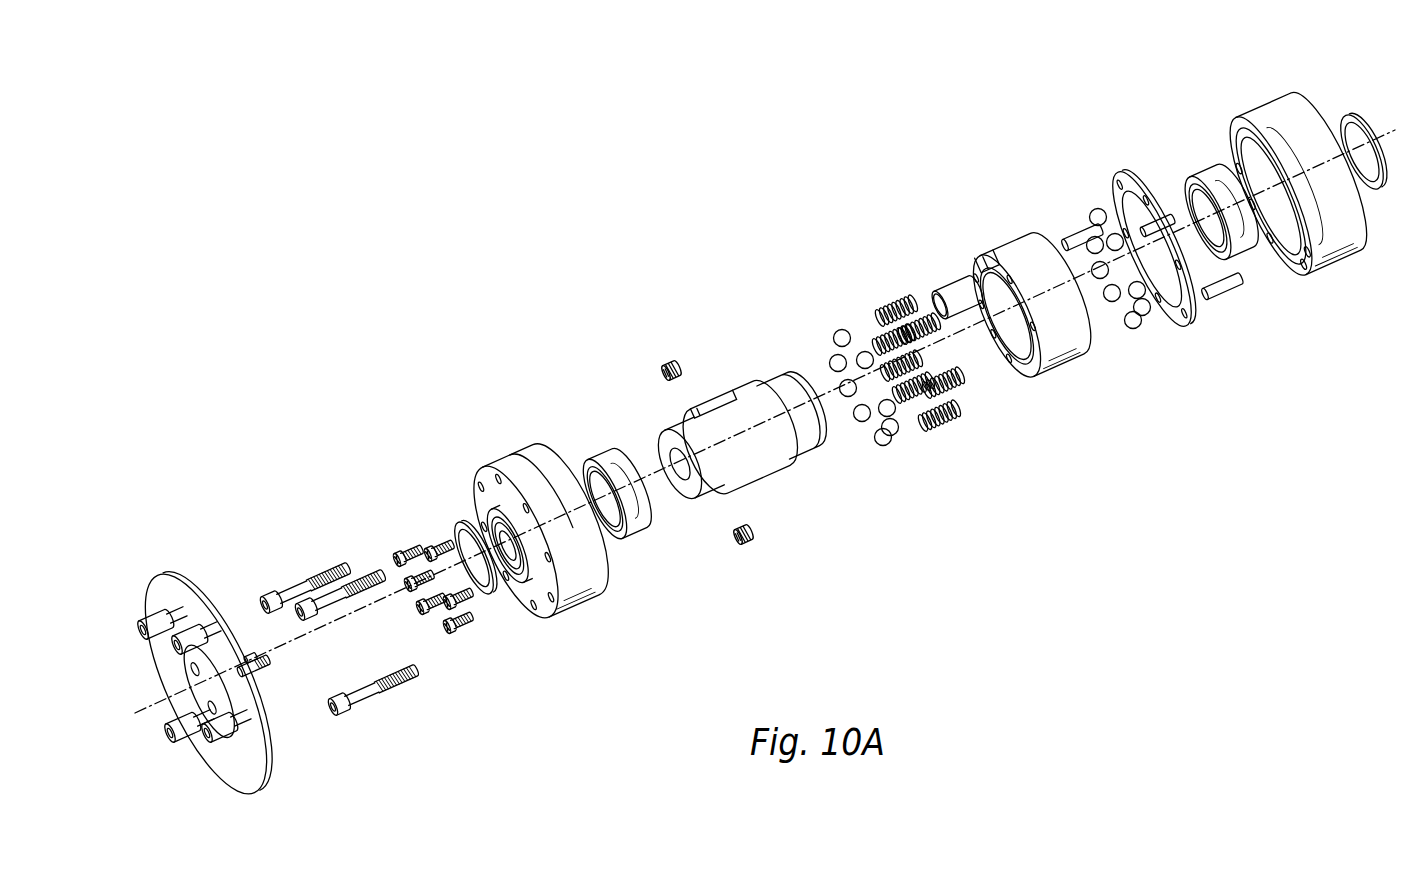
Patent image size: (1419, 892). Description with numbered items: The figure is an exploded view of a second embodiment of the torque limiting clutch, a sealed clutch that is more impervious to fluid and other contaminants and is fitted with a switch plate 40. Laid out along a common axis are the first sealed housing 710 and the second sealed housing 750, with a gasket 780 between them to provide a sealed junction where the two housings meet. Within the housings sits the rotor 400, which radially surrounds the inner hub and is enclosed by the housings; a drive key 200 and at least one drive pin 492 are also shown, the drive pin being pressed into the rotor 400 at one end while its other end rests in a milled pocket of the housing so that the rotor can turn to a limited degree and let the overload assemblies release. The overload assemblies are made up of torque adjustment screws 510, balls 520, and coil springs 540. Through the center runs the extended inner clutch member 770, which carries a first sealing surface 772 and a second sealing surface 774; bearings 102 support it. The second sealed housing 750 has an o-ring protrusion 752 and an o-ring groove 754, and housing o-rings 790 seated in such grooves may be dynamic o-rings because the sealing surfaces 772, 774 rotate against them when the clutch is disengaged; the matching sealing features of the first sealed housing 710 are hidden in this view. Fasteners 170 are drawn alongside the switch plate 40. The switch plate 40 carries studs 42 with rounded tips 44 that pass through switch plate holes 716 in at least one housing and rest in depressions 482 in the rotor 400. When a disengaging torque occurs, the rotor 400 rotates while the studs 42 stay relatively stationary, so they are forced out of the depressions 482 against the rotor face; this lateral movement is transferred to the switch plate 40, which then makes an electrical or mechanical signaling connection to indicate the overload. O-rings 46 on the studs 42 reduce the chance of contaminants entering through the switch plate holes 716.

The switch plate 40 is at (178, 598).
The studs 42 is at (262, 678).
The rounded tips 44 is at (270, 661).
The o-rings 46 is at (257, 657).
The bearing 102 is at (641, 520).
The bolts 170 is at (328, 578).
The drive key 200 is at (955, 291).
The rotor 400 is at (1025, 271).
The depressions 482 is at (1038, 335).
The drive pin 492 is at (1075, 242).
The torque adjustment screws 510 is at (432, 548).
The balls 520 is at (893, 437).
The coil springs 540 is at (915, 326).
The first sealed housing 710 is at (1273, 115).
The switch plate holes 716 is at (568, 455).
The second sealed housing 750 is at (604, 598).
The o-ring protrusion 752 is at (510, 470).
The o-ring groove 754 is at (502, 587).
The extended inner clutch member 770 is at (742, 421).
The first sealing surface 772 is at (668, 443).
The second sealing surface 774 is at (805, 408).
The gasket 780 is at (1128, 175).
The housing o-rings 790 is at (462, 522).